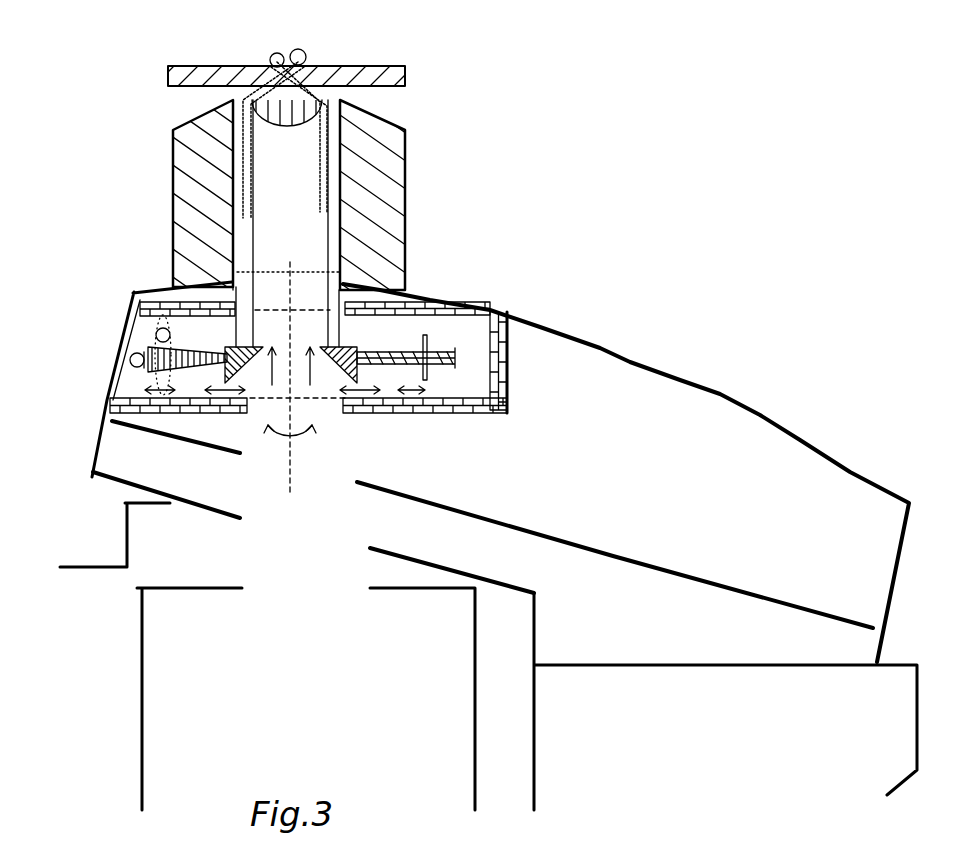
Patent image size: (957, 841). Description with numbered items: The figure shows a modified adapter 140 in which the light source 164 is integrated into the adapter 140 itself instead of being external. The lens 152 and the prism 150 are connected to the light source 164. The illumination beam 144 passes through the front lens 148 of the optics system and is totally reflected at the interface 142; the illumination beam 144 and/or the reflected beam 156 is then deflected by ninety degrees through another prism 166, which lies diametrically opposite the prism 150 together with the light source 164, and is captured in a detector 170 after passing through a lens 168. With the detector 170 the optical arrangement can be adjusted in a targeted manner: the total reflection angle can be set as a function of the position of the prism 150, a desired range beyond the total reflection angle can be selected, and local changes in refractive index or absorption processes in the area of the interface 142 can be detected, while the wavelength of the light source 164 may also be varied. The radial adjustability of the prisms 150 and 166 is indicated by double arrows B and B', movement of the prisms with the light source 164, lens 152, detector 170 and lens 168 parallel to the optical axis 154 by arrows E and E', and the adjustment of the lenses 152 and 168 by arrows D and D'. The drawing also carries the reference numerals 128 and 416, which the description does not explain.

The support body 128 is at (722, 388).
The adapter 140 is at (507, 350).
The interface 142 is at (323, 64).
The illumination beam 144 is at (250, 191).
The front lens 148 is at (300, 132).
The prism 150 is at (222, 268).
The lens 152 is at (160, 320).
The optical axis 154 is at (298, 450).
The reflected beam 156 is at (322, 207).
The light source 164 is at (130, 357).
The prism 166 is at (360, 350).
The lens 168 is at (432, 345).
The detector 170 is at (492, 312).
The clamping block 416 is at (406, 200).